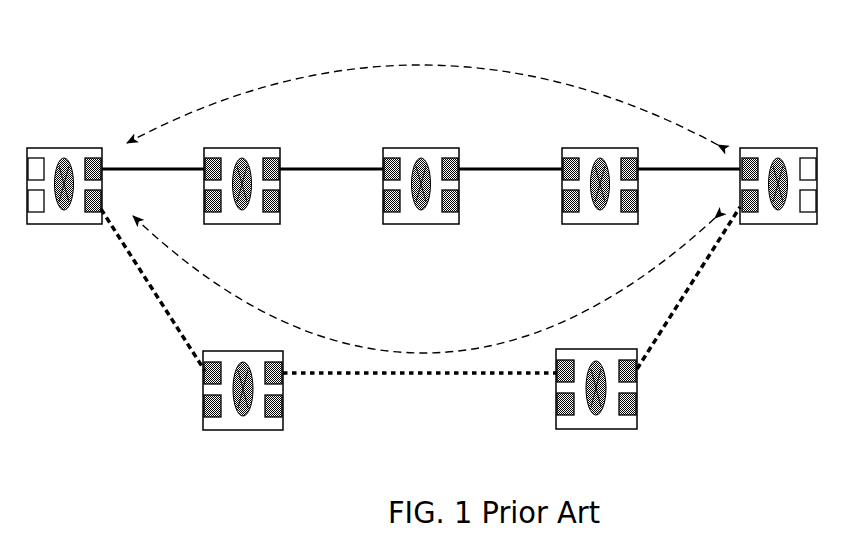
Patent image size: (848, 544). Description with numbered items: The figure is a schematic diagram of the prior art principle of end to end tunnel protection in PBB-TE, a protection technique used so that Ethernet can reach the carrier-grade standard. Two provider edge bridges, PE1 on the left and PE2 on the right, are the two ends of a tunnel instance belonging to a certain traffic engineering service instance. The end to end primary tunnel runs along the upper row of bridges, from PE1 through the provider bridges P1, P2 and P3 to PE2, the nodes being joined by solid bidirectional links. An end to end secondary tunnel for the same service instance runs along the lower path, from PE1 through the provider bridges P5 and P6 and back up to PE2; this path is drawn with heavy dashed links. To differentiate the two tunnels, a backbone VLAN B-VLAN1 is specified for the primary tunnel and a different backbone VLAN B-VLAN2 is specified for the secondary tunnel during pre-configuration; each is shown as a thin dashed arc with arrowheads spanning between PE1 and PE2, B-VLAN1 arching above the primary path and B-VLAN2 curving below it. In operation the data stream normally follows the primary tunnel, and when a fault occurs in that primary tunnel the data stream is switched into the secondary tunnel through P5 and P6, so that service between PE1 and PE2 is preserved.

The provider edge bridge PE1 is at (64, 171).
The provider bridge P1 is at (242, 172).
The provider bridge P2 is at (421, 172).
The provider bridge P3 is at (600, 172).
The provider edge bridge PE2 is at (778, 171).
The provider bridge P5 is at (243, 407).
The provider bridge P6 is at (596, 405).
The backbone VLAN B-VLAN1 is at (422, 92).
The backbone VLAN B-VLAN2 is at (424, 284).